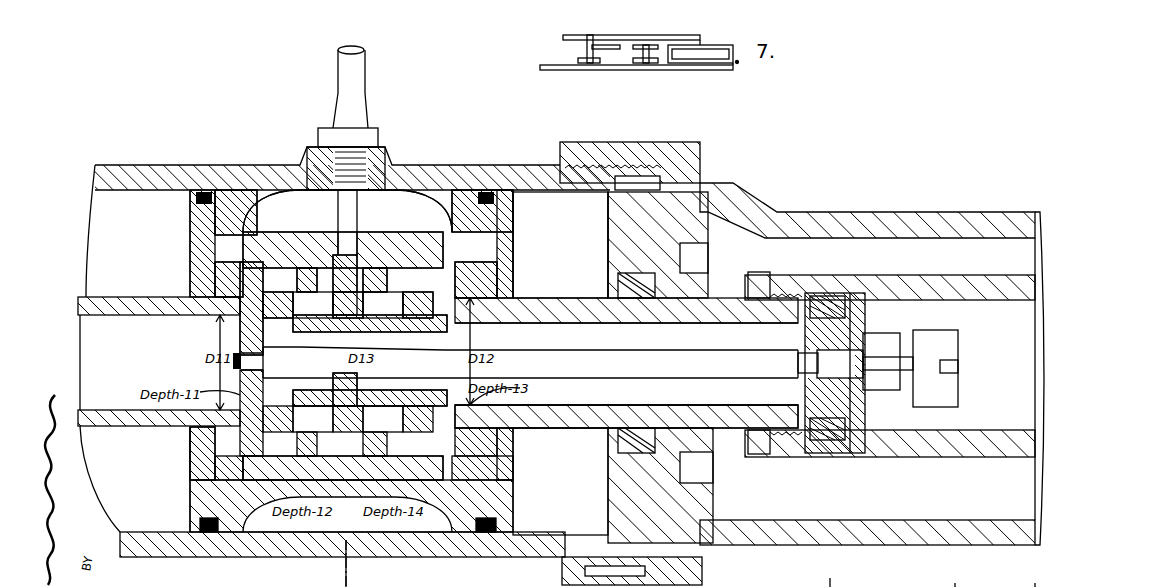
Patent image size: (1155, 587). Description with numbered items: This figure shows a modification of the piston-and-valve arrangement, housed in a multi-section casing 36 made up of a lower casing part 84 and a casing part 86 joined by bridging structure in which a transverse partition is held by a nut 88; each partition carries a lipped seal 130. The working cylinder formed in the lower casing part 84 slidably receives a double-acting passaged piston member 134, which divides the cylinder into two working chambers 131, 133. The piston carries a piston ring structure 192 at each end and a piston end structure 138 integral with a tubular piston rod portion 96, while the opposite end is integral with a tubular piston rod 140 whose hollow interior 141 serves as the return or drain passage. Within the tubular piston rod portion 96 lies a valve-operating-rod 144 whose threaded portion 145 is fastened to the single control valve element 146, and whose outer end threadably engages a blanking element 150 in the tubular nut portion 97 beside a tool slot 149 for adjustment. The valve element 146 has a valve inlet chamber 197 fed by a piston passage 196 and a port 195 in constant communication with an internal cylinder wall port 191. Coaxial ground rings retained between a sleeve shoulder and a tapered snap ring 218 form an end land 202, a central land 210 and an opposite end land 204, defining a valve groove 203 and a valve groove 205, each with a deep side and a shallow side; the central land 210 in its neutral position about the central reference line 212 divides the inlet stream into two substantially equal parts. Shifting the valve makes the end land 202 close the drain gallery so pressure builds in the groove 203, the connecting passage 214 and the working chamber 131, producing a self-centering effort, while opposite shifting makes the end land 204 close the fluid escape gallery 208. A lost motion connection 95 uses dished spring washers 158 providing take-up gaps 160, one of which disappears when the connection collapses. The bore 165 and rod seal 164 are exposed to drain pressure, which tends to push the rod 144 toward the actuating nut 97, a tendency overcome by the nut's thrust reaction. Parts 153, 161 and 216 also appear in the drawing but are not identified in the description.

The multi-section casing 36 is at (700, 560).
The lower casing part 84 is at (462, 560).
The casing part 86 is at (958, 212).
The nut 88 is at (650, 142).
The lost motion connection 95 is at (598, 405).
The tubular piston rod portion 96 is at (605, 298).
The tubular nut portion 97 is at (1045, 290).
The lipped seal 130 is at (615, 452).
The working chamber 131 is at (145, 246).
The working chamber 133 is at (567, 256).
The piston member 134 is at (495, 520).
The piston end structure 138 is at (500, 458).
The tubular piston rod 140 is at (90, 297).
The hollow interior 141 is at (88, 410).
The valve-operating-rod 144 is at (695, 360).
The threaded portion 145 is at (245, 350).
The control valve element 146 is at (462, 326).
The transverse circumferentially extending slot 149 is at (910, 368).
The blanking element 150 is at (1036, 577).
The member 153 is at (960, 577).
The spring washers 158 is at (815, 300).
The take-up gaps 160 is at (815, 360).
The washer 161 is at (832, 573).
The rod seal 164 is at (855, 345).
The bore 165 is at (797, 380).
The internal cylinder wall port 191 is at (295, 206).
The piston ring structure 192 is at (200, 522).
The port 195 is at (348, 232).
The piston passage 196 is at (352, 236).
The valve inlet chamber 197 is at (358, 400).
The end land 202 is at (318, 333).
The valve groove 203 is at (343, 356).
The end land 204 is at (420, 318).
The valve groove 205 is at (342, 309).
The fluid escape gallery 208 is at (428, 290).
The central land 210 is at (340, 400).
The central reference line 212 is at (352, 578).
The connecting passage 214 is at (235, 492).
The bushing 216 is at (482, 211).
The tapered snap ring 218 is at (476, 280).